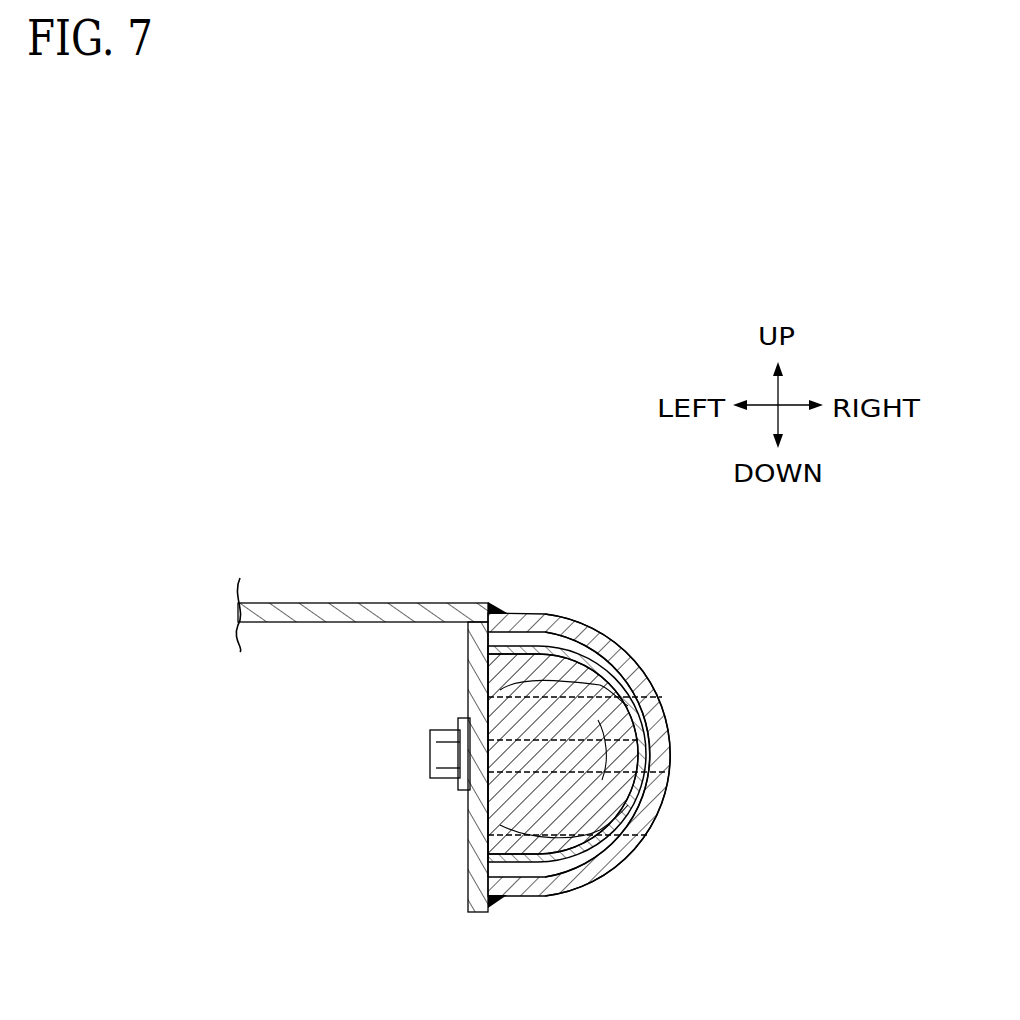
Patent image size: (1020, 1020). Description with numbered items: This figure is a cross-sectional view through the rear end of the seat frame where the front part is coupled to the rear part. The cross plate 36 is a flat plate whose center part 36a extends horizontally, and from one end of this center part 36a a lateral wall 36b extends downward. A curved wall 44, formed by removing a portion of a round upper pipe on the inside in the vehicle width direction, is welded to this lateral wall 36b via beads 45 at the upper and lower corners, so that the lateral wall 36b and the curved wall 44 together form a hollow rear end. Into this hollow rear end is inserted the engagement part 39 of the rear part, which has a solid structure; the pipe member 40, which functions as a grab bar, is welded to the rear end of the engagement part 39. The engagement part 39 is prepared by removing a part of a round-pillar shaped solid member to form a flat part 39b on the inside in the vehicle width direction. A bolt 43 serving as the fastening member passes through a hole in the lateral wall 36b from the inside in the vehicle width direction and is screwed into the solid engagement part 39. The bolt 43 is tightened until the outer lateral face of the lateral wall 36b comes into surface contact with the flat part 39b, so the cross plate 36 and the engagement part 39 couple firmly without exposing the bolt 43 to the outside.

The cross plate 36 is at (362, 718).
The center part 36a is at (302, 611).
The lateral wall 36b is at (468, 861).
The engagement part 39 is at (545, 739).
The flat part 39b is at (468, 695).
The pipe member 40 is at (612, 843).
The bolt 43 is at (657, 693).
The curved wall 44 is at (668, 788).
The bead 45 is at (498, 607).